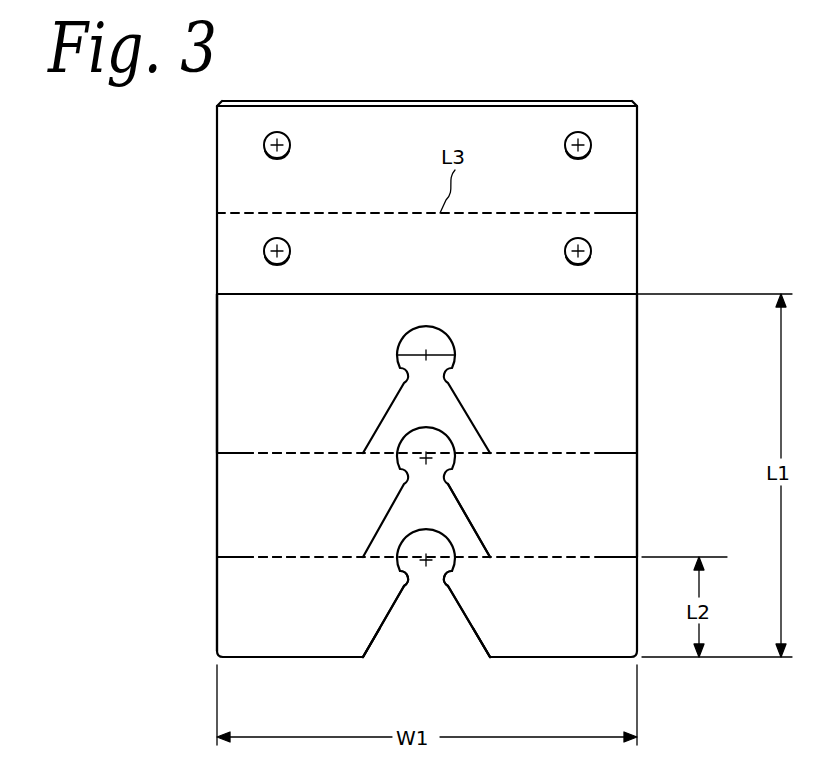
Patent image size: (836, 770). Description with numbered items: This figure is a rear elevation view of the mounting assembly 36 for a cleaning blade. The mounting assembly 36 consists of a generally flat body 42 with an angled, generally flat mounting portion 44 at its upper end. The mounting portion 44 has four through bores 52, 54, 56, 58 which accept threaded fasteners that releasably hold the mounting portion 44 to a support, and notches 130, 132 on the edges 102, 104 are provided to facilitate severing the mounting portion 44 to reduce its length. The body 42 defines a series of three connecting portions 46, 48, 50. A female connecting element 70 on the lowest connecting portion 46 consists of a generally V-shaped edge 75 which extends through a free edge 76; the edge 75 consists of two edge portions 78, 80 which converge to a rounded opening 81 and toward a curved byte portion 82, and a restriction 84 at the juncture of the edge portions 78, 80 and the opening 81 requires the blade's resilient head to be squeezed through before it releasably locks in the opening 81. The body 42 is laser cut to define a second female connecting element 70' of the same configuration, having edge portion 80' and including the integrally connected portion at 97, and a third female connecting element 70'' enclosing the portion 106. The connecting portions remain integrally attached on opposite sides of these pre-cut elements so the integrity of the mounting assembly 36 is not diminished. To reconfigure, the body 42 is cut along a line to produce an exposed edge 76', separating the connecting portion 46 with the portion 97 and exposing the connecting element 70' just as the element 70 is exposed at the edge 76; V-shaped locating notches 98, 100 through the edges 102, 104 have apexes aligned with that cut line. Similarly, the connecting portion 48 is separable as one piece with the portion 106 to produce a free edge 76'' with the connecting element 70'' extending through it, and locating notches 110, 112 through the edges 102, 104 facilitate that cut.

The mounting assembly 36 is at (640, 345).
The body 42 is at (208, 524).
The mounting portion 44 is at (398, 116).
The connecting portion 46 is at (336, 614).
The connecting portion 48 is at (328, 532).
The connecting portion 50 is at (286, 408).
The through bore 52 is at (586, 247).
The through bore 54 is at (579, 132).
The through bore 56 is at (273, 132).
The through bore 58 is at (284, 243).
The female connecting element 70 is at (426, 593).
The second female connecting element 70' is at (426, 492).
The third female connecting element 70'' is at (426, 389).
The V-shaped edge 75 is at (489, 657).
The free edge 76 is at (293, 688).
The exposed edge 76' is at (258, 587).
The free edge 76'' is at (258, 490).
The edge portion 78 is at (368, 652).
The edge portion 80 is at (494, 621).
The edge portion 80' is at (496, 520).
The rounded opening 81 is at (455, 573).
The byte portion 82 is at (427, 530).
The restriction 84 is at (418, 587).
The integrally connected portion 97 is at (438, 470).
The locating notch 98 is at (217, 557).
The locating notch 100 is at (637, 557).
The edge 102 is at (217, 372).
The edge 104 is at (637, 397).
The portion 106 is at (440, 368).
The locating notch 110 is at (217, 453).
The locating notch 112 is at (637, 455).
The notch 130 is at (217, 213).
The notch 132 is at (637, 213).